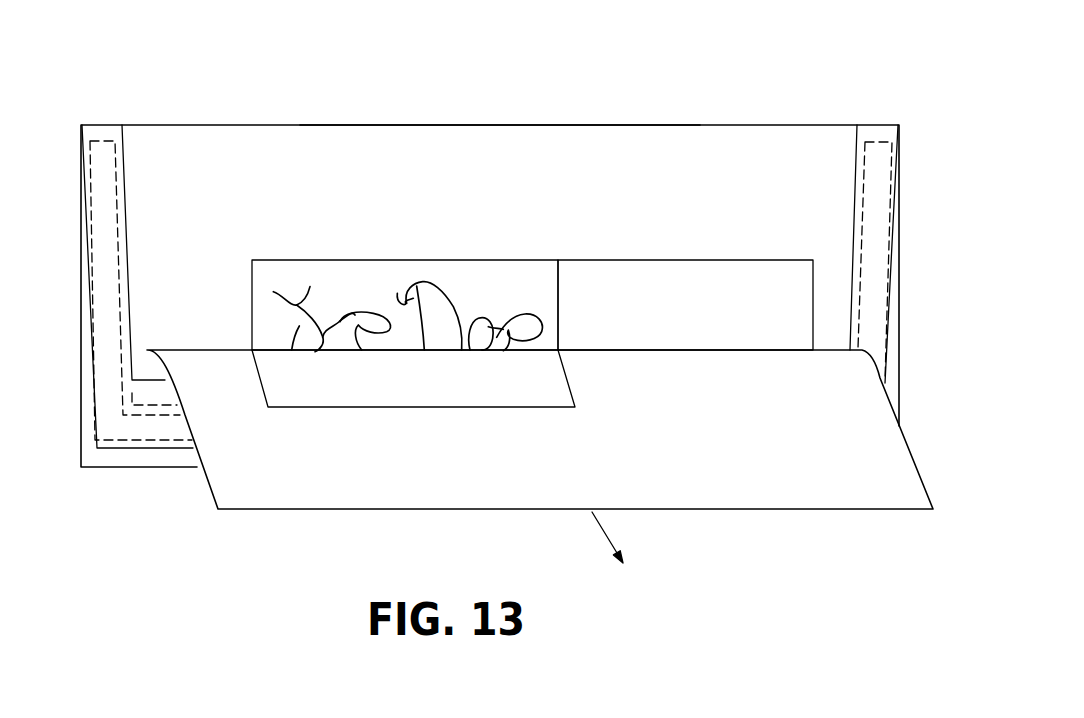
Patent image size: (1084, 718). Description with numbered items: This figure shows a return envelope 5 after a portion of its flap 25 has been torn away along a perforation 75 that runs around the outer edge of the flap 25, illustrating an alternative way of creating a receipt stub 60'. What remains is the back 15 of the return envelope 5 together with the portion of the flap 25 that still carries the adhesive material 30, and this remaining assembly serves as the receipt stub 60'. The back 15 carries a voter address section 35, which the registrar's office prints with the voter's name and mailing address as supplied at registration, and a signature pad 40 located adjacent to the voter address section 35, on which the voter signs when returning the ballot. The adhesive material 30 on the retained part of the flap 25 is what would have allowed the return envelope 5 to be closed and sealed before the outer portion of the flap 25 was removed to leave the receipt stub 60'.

The return envelope 5 is at (636, 102).
The back 15 is at (742, 147).
The receipt stub 60' is at (500, 90).
The adhesive material 30 is at (858, 241).
The perforation 75 is at (158, 405).
The signature pad 40 is at (448, 272).
The voter address section 35 is at (710, 277).
The flap 25 is at (390, 480).